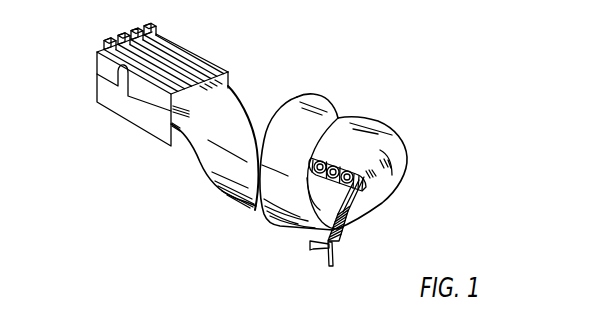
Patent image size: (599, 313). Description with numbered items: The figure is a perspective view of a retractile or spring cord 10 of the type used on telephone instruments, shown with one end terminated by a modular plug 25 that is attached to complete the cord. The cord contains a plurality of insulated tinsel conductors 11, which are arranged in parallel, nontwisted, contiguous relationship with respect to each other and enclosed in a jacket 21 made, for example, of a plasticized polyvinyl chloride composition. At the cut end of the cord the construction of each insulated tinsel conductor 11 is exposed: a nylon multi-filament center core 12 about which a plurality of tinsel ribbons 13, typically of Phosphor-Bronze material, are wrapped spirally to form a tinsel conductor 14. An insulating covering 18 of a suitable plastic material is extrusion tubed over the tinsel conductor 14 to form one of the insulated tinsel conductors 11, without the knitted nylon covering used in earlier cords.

The spring cord 10 is at (410, 130).
The insulated tinsel conductors 11 is at (362, 200).
The nylon multi-filament center core 12 is at (335, 254).
The tinsel ribbons 13 is at (311, 246).
The tinsel conductor 14 is at (351, 240).
The insulating covering 18 is at (351, 204).
The jacket 21 is at (297, 97).
The modular plug 25 is at (213, 68).